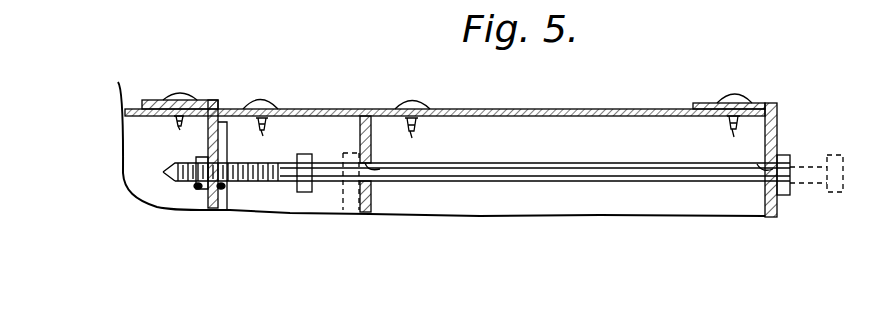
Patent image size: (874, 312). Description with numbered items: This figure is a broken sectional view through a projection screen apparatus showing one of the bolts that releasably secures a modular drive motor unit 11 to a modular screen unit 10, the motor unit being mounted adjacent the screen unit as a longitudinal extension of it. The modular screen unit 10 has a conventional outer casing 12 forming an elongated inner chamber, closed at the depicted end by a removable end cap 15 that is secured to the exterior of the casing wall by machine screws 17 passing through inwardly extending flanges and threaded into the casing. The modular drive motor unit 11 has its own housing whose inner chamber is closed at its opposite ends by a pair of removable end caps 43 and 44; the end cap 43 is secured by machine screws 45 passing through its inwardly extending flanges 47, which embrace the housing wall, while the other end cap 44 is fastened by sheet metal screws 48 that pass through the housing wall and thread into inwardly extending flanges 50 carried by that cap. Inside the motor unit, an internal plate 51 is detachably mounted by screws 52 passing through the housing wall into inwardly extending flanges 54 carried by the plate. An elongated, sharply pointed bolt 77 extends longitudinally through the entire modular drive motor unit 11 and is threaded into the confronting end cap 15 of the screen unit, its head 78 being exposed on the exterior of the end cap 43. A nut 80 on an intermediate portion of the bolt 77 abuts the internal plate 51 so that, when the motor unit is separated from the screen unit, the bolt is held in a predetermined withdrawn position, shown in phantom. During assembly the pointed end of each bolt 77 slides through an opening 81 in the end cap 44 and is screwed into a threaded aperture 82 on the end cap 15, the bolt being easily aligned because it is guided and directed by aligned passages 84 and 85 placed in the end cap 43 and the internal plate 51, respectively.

The modular screen unit 10 is at (108, 155).
The modular drive motor unit 11 is at (586, 106).
The outer casing 12 is at (118, 84).
The end cap 15 is at (206, 137).
The machine screws 17 is at (182, 96).
The end cap 43 is at (778, 127).
The end cap 44 is at (227, 148).
The machine screws 45 is at (733, 100).
The inwardly extending flanges 47 is at (699, 102).
The sheet metal screws 48 is at (256, 105).
The inwardly extending flanges 50 is at (265, 120).
The internal plate 51 is at (371, 200).
The screws 52 is at (408, 104).
The inwardly extending flanges 54 is at (425, 117).
The elongated bolts 77 is at (580, 172).
The heads 78 is at (832, 193).
The nut 80 is at (308, 192).
The openings 81 is at (224, 187).
The threaded apertures 82 is at (199, 188).
The passage 84 is at (760, 168).
The passage 85 is at (380, 163).